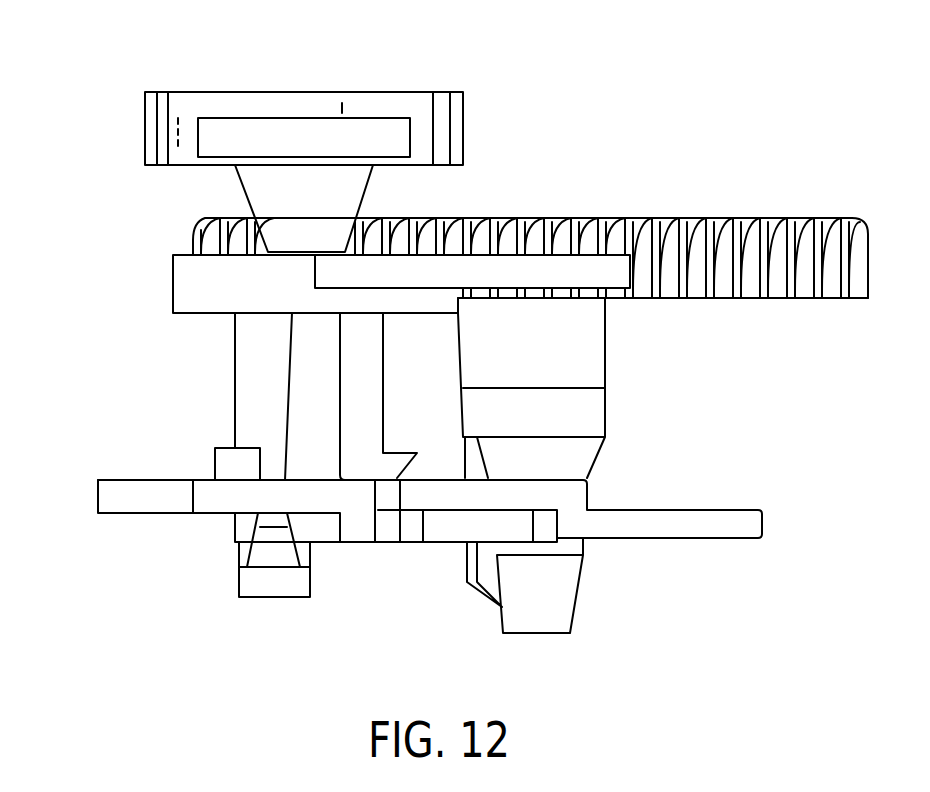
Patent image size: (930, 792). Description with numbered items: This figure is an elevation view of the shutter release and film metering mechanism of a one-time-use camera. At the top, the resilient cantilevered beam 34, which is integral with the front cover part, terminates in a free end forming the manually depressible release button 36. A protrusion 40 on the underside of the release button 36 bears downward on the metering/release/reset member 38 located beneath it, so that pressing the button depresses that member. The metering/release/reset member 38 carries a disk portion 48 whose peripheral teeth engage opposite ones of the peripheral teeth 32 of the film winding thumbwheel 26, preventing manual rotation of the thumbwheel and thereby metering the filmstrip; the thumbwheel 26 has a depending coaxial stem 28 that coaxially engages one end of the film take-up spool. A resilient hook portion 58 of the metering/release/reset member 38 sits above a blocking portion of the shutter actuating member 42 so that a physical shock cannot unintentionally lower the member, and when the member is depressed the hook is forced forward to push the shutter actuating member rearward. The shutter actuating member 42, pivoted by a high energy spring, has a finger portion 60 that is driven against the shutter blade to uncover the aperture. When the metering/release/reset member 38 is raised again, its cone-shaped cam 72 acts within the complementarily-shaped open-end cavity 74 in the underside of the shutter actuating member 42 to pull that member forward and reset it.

The film winding thumbwheel 26 is at (720, 215).
The coaxial stem 28 is at (563, 600).
The peripheral teeth 32 is at (795, 300).
The resilient cantilevered beam 34 is at (297, 133).
The release button 36 is at (190, 105).
The metering/release/reset member 38 is at (245, 362).
The protrusion 40 is at (258, 185).
The shutter actuating member 42 is at (193, 515).
The disk portion 48 is at (185, 285).
The resilient hook portion 58 is at (400, 450).
The finger portion 60 is at (100, 490).
The cone-shaped cam 72 is at (273, 557).
The open-end cavity 74 is at (280, 520).